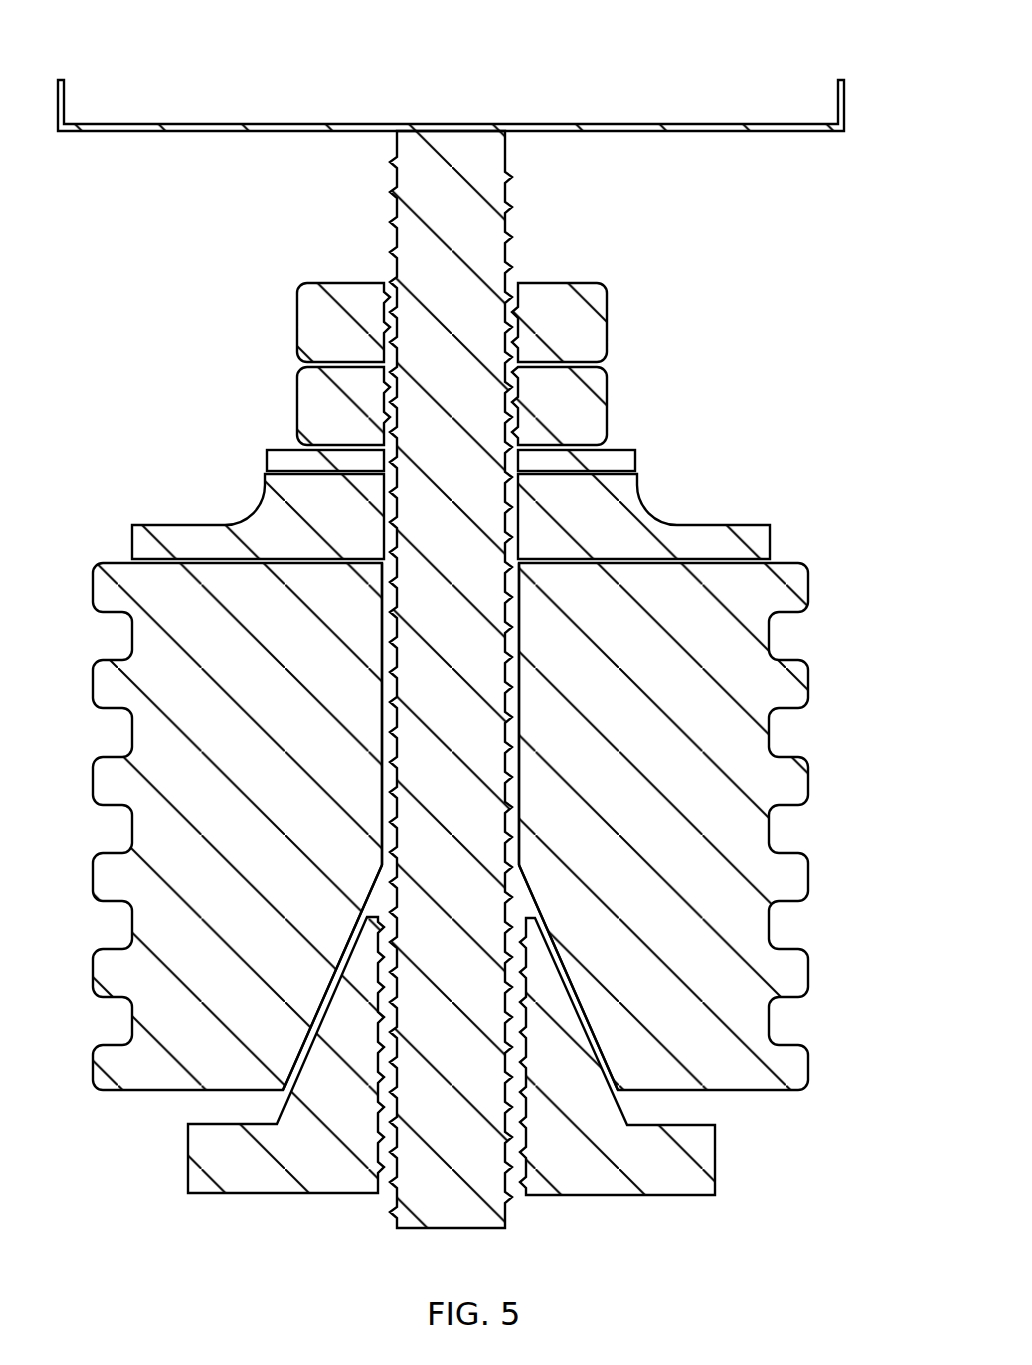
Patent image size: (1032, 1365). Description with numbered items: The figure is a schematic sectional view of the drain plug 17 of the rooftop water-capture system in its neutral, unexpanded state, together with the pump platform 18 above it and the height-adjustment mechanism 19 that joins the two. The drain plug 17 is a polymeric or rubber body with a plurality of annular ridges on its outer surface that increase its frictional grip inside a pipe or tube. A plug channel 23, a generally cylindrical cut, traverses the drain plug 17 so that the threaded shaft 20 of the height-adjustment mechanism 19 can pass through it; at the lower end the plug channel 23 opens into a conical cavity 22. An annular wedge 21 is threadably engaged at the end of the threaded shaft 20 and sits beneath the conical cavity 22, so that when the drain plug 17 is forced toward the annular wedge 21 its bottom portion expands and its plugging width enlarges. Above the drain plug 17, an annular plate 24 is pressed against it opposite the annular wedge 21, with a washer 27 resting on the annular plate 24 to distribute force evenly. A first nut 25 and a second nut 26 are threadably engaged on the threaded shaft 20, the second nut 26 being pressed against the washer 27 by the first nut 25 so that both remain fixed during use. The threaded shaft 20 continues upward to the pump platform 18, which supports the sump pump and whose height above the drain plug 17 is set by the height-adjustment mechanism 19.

The drain plug 17 is at (752, 828).
The pump platform 18 is at (690, 127).
The height-adjustment mechanism 19 is at (246, 168).
The threaded shaft 20 is at (397, 228).
The annular wedge 21 is at (245, 1183).
The conical cavity 22 is at (612, 1073).
The plug channel 23 is at (523, 897).
The annular plate 24 is at (703, 533).
The first nut 25 is at (588, 420).
The second nut 26 is at (588, 338).
The washer 27 is at (278, 462).